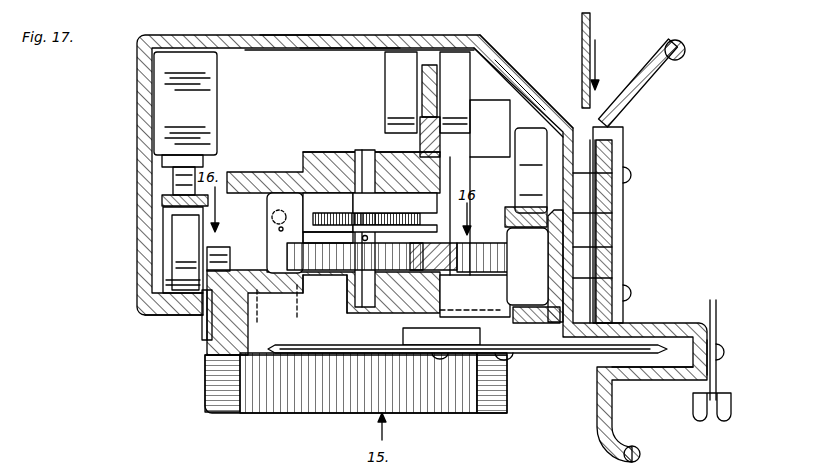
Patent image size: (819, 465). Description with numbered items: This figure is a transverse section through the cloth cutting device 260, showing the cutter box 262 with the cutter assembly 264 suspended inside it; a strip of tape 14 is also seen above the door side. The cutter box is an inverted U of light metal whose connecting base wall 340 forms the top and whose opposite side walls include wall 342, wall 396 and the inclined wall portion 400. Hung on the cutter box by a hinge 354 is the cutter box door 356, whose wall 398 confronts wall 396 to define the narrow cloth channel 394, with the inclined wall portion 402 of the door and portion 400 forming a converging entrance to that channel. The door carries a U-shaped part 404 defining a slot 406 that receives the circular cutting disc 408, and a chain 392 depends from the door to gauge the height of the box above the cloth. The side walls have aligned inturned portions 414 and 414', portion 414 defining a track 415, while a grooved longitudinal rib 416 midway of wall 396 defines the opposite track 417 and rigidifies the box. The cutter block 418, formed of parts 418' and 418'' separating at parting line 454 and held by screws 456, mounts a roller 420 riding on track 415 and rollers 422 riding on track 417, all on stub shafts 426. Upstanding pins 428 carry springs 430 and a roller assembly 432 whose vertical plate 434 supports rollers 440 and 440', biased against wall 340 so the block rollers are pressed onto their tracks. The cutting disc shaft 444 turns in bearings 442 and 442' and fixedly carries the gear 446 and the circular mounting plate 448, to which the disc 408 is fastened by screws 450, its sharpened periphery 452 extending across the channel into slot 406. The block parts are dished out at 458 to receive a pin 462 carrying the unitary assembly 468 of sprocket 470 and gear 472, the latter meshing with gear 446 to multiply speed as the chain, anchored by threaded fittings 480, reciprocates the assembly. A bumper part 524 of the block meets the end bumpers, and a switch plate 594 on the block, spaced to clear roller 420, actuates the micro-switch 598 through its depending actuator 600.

The tape 14 is at (591, 30).
The cloth cutting device 260 is at (227, 33).
The cutter box 262 is at (296, 34).
The cutter assembly 264 is at (346, 84).
The base wall 340 is at (175, 34).
The side wall 342 is at (173, 182).
The hinge 354 is at (592, 212).
The cutter box door 356 is at (656, 80).
The chain 392 is at (731, 408).
The cloth channel 394 is at (602, 150).
The wall 396 is at (580, 240).
The wall 398 is at (607, 266).
The inclined wall portion 400 is at (512, 62).
The inclined wall portion 402 is at (661, 52).
The U-shaped part 404 is at (687, 382).
The slot 406 is at (648, 365).
The cutting disc 408 is at (607, 352).
The inturned portion 414 is at (159, 330).
The inturned portion 414' is at (547, 326).
The track 415 is at (158, 296).
The longitudinal rib 416 is at (525, 228).
The track 417 is at (529, 266).
The cutter block 418 is at (333, 147).
The block part 418' is at (371, 124).
The block part 418'' is at (323, 312).
The roller 420 is at (163, 242).
The roller 422 is at (548, 100).
The stub shaft 426 is at (205, 259).
The upstanding pin 428 is at (456, 102).
The spring 430 is at (401, 105).
The roller assembly 432 is at (431, 63).
The vertical plate 434 is at (458, 52).
The roller 440 is at (401, 72).
The roller 440' is at (520, 65).
The bearing 442 is at (456, 310).
The bearing 442' is at (480, 187).
The cutting disc shaft 444 is at (395, 212).
The gear 446 is at (438, 252).
The mounting plate 448 is at (457, 360).
The screw 450 is at (520, 354).
The sharpened periphery 452 is at (663, 352).
The parting line 454 is at (361, 212).
The screw 456 is at (283, 300).
The dished-out portion 458 is at (215, 255).
The pin 462 is at (367, 150).
The unitary assembly 468 is at (363, 307).
The sprocket 470 is at (335, 237).
The gear 472 is at (322, 300).
The threaded fitting 480 is at (278, 193).
The bumper part 524 is at (347, 407).
The switch plate 594 is at (162, 200).
The micro-switch 598 is at (178, 104).
The actuator 600 is at (162, 160).